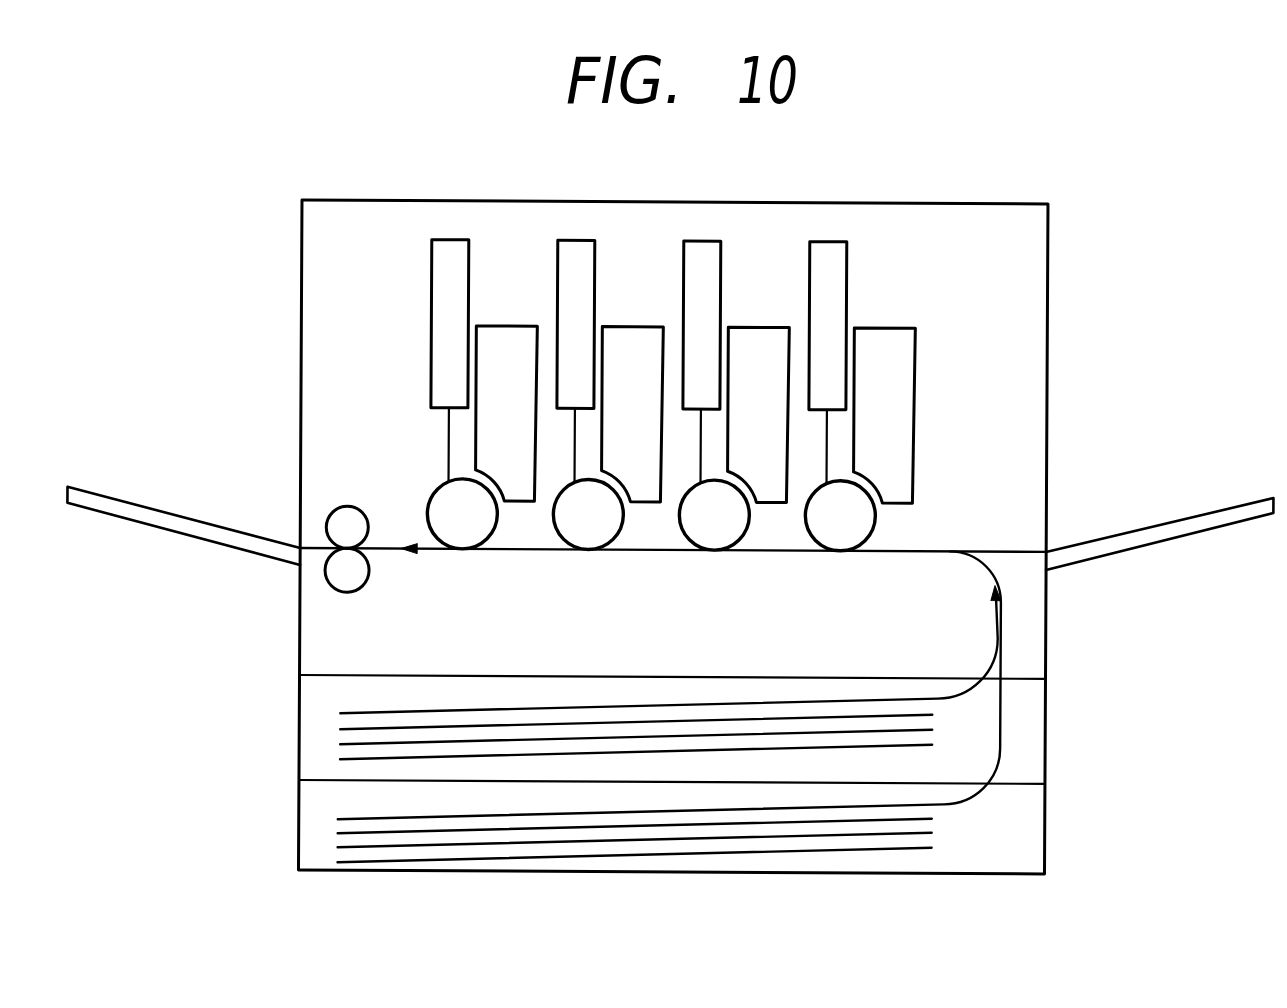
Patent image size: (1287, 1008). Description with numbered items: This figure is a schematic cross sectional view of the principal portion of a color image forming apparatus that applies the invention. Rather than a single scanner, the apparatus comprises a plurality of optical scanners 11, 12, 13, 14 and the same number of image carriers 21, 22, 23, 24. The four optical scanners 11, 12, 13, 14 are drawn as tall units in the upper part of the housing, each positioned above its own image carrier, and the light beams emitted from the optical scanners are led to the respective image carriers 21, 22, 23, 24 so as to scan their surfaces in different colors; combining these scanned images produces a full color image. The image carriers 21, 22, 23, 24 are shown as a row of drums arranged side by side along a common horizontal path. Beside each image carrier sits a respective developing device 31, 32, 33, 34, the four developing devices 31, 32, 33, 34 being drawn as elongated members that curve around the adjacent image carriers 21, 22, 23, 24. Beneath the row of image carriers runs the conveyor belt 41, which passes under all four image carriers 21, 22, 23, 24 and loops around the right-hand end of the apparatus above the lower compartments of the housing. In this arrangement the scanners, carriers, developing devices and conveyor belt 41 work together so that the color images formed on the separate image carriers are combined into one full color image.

The optical scanner 11 is at (470, 272).
The optical scanner 12 is at (596, 272).
The optical scanner 13 is at (722, 272).
The optical scanner 14 is at (848, 272).
The image carrier 21 is at (448, 532).
The image carrier 22 is at (574, 532).
The image carrier 23 is at (700, 532).
The image carrier 24 is at (826, 532).
The developing device 31 is at (518, 490).
The developing device 32 is at (644, 490).
The developing device 33 is at (770, 490).
The developing device 34 is at (896, 490).
The conveyor belt 41 is at (928, 549).